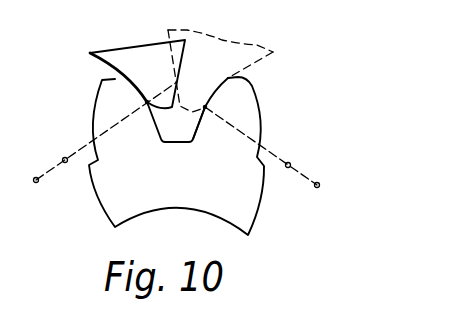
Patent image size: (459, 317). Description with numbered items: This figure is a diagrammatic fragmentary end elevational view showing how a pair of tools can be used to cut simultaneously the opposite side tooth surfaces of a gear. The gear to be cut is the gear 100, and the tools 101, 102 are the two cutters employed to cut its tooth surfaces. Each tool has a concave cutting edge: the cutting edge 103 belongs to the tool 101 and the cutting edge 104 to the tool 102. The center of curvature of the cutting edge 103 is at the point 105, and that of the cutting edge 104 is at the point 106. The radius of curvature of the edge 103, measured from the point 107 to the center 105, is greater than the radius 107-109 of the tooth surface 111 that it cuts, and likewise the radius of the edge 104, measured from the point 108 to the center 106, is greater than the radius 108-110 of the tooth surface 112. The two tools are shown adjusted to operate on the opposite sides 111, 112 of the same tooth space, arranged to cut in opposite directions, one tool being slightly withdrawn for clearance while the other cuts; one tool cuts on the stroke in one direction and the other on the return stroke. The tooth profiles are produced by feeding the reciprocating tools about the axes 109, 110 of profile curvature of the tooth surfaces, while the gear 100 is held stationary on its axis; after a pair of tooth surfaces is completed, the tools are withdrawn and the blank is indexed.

The gear 100 is at (168, 198).
The tool 101 is at (138, 58).
The tool 102 is at (233, 42).
The concave cutting edge 103 is at (107, 63).
The concave cutting edge 104 is at (256, 62).
The center of curvature 105 is at (34, 178).
The center of curvature 106 is at (320, 184).
The point on tooth surface 107 is at (147, 105).
The point on tooth surface 108 is at (208, 107).
The axis of profile curvature 109 is at (65, 157).
The axis of profile curvature 110 is at (291, 163).
The tooth surface 111 is at (176, 122).
The tooth surface 112 is at (197, 131).